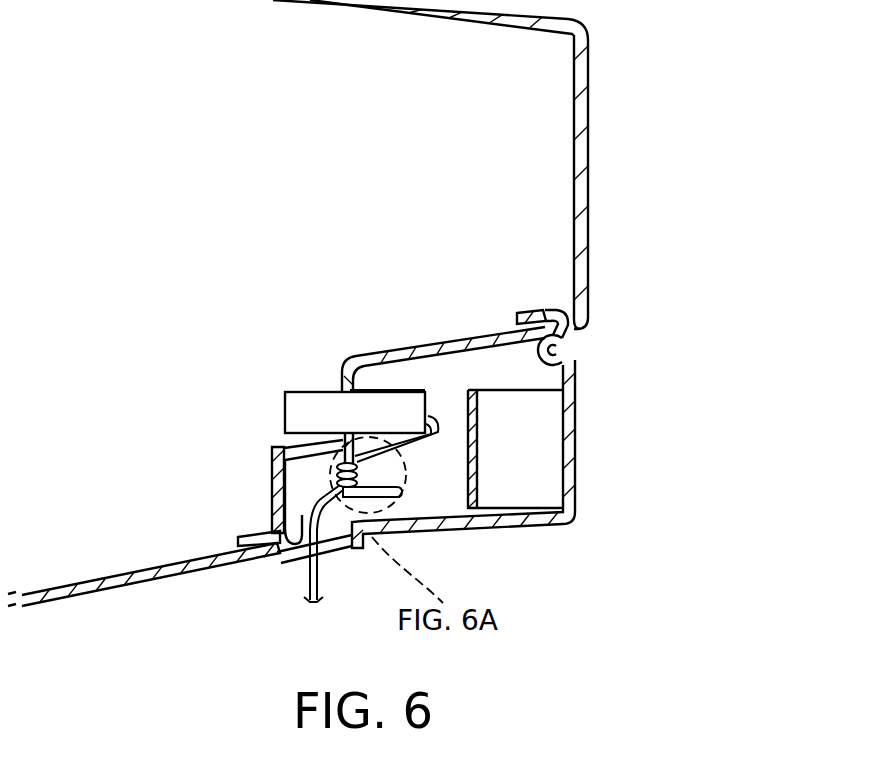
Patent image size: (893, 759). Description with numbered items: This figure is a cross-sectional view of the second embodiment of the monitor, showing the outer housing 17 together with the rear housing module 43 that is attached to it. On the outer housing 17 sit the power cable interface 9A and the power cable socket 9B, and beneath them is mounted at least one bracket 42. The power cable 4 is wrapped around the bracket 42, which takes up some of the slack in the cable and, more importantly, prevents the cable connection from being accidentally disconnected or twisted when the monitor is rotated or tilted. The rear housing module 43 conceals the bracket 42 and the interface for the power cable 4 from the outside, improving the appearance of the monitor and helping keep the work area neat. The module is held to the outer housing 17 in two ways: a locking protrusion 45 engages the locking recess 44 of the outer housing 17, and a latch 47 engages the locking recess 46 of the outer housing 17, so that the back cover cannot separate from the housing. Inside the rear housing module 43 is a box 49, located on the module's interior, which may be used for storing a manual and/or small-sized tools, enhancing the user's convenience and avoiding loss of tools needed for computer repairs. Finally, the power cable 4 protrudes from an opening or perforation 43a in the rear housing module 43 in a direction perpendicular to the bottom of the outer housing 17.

The outer housing 17 is at (588, 160).
The locking protrusion 45 is at (535, 310).
The locking recess 44 is at (573, 357).
The rear housing module 43 is at (574, 505).
The box 49 is at (553, 460).
The power cable interface 9A is at (322, 405).
The power cable socket 9B is at (387, 390).
The bracket 42 is at (404, 497).
The locking recess 46 is at (302, 517).
The latch 47 is at (240, 537).
The power cable 4 is at (318, 570).
The opening or perforation 43a is at (298, 572).